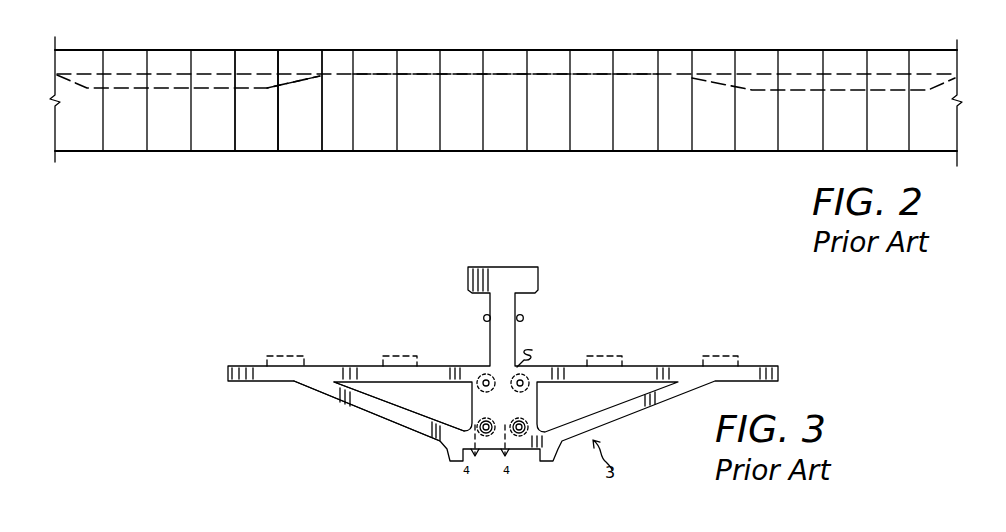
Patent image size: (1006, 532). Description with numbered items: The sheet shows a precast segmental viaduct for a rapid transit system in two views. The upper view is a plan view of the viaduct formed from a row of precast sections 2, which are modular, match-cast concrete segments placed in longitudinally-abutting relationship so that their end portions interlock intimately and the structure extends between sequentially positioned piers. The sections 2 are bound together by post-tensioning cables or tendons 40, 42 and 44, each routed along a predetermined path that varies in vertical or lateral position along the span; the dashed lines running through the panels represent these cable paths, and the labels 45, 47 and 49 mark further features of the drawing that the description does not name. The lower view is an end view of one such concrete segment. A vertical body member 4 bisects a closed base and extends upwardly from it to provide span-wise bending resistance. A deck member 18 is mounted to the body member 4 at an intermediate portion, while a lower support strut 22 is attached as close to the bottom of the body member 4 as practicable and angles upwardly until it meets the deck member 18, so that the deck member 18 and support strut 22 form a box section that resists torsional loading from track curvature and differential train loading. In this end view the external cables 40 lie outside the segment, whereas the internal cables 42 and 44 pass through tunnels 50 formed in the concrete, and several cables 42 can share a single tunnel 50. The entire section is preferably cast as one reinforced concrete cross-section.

In FIG. 2, the precast section 2 is at (126, 55).
In FIG. 2, the post-tensioning cable 40 is at (262, 74).
In FIG. 3, the post-tensioning cable 40 is at (523, 320).
In FIG. 2, the post-tensioning cable 42 is at (593, 75).
In FIG. 3, the post-tensioning cable 42 is at (480, 422).
In FIG. 2, the post-tensioning cable 44 is at (177, 88).
In FIG. 3, the post-tensioning cable 44 is at (524, 423).
In FIG. 2, the transition region 45 is at (285, 83).
In FIG. 2, the panel 47 is at (258, 146).
In FIG. 2, the post 49 is at (295, 146).
In FIG. 3, the body member 4 is at (473, 275).
In FIG. 3, the deck member 18 is at (633, 367).
In FIG. 3, the lower support strut 22 is at (367, 405).
In FIG. 3, the tunnel 50 is at (485, 434).